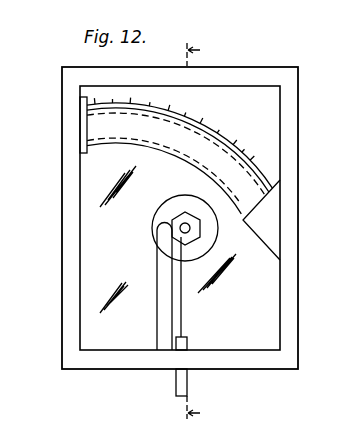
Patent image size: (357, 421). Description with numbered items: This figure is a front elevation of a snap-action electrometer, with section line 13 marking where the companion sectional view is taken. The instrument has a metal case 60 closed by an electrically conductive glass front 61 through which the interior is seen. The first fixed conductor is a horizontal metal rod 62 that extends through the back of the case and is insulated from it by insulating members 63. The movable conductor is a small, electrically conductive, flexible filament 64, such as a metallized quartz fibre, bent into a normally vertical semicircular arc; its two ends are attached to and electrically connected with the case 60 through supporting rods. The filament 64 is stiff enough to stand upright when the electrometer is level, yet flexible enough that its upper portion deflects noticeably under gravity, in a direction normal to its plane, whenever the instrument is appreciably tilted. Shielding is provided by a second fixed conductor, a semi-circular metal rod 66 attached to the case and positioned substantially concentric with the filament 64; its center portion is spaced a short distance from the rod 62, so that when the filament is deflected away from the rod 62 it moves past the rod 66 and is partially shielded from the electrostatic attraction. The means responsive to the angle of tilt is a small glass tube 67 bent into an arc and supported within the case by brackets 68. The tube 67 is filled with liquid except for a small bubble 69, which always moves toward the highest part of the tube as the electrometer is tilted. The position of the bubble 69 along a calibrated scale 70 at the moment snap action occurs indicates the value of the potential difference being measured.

The section line 13— 13 is at (202, 232).
The metal case 60 is at (298, 366).
The electrically conductive glass front 61 is at (281, 323).
The horizontal metal rod 62 is at (163, 221).
The insulating members 63 is at (210, 248).
The flexible filament 64 is at (182, 322).
The semi-circular metal rod 66 is at (161, 328).
The glass tube 67 is at (275, 178).
The brackets 68 is at (83, 140).
The bubble 69 is at (90, 115).
The calibrated scale 70 is at (273, 120).